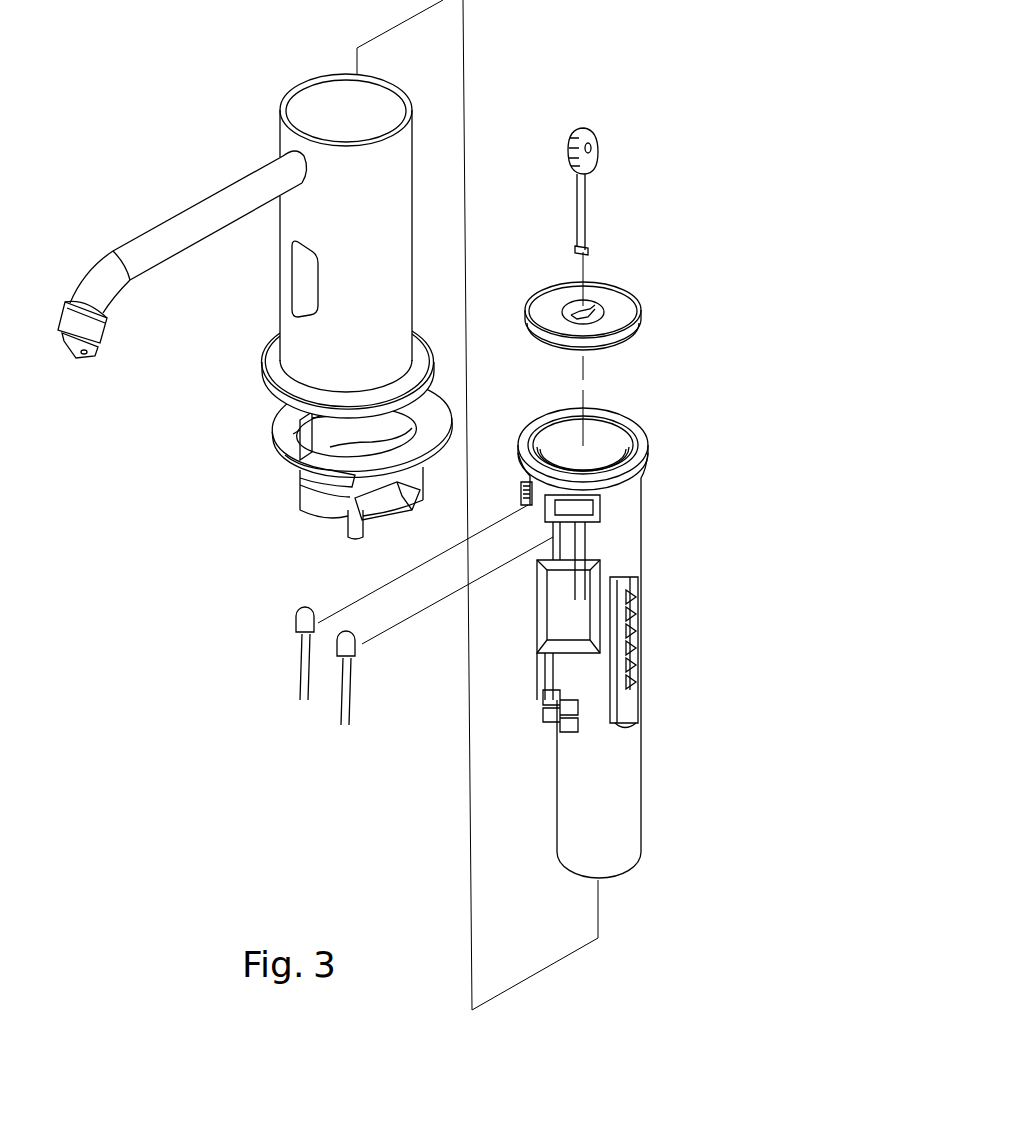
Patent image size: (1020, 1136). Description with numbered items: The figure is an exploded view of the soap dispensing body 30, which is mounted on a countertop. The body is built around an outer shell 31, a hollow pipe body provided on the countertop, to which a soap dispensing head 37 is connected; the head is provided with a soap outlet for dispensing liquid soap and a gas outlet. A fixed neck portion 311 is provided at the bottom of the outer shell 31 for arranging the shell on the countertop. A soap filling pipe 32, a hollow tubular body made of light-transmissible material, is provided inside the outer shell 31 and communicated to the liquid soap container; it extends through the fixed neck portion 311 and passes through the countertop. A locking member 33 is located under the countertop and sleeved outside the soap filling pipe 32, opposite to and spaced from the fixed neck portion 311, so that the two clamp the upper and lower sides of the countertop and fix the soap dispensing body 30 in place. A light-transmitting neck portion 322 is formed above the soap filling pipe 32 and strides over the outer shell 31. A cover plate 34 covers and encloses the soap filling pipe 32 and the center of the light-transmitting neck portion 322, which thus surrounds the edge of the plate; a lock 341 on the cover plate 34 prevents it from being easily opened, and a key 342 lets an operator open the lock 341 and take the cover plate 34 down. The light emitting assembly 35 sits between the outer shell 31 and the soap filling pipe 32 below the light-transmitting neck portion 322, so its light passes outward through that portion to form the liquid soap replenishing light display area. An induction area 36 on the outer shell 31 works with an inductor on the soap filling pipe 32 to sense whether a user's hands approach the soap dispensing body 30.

The soap dispensing body 30 is at (676, 42).
The outer shell 31 is at (412, 192).
The fixed neck portion 311 is at (268, 358).
The soap filling pipe 32 is at (557, 818).
The light-transmitting neck portion 322 is at (646, 474).
The locking member 33 is at (277, 440).
The cover plate 34 is at (556, 298).
The lock 341 is at (600, 306).
The key 342 is at (590, 194).
The light emitting assembly 35 is at (345, 645).
The induction area 36 is at (292, 268).
The soap dispensing head 37 is at (175, 230).